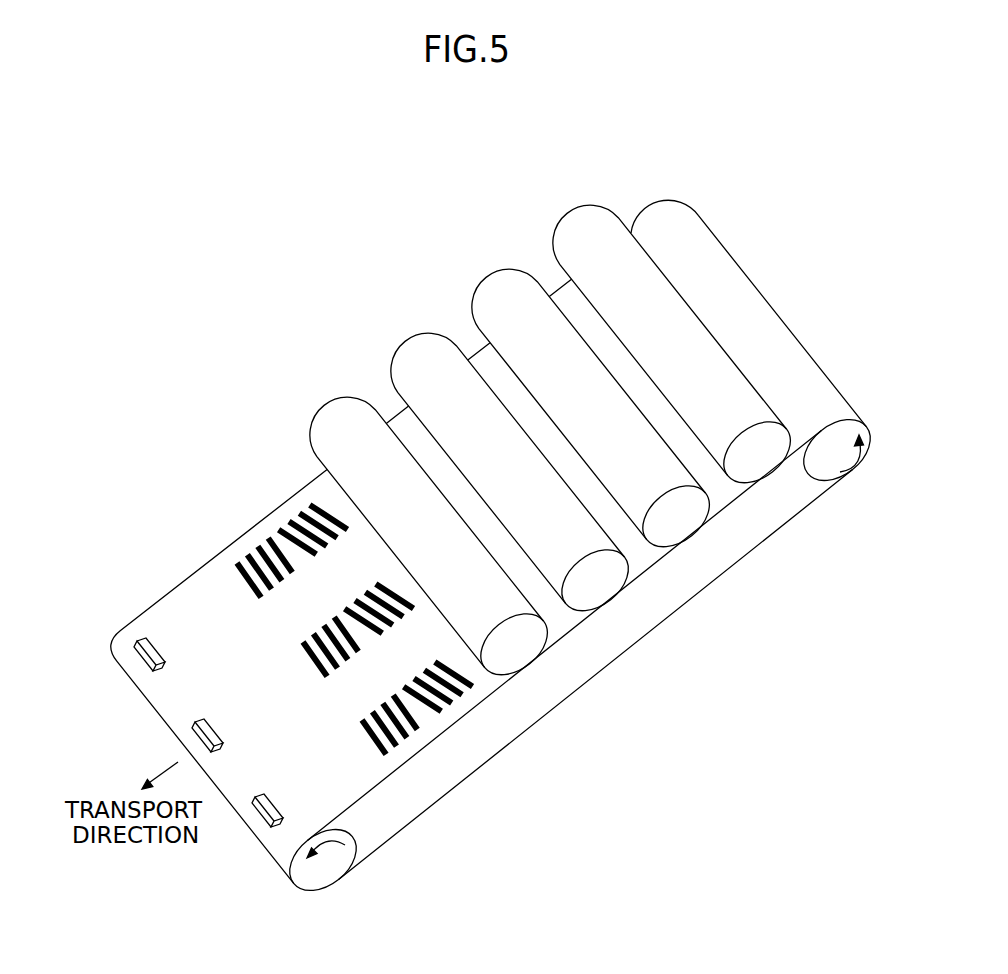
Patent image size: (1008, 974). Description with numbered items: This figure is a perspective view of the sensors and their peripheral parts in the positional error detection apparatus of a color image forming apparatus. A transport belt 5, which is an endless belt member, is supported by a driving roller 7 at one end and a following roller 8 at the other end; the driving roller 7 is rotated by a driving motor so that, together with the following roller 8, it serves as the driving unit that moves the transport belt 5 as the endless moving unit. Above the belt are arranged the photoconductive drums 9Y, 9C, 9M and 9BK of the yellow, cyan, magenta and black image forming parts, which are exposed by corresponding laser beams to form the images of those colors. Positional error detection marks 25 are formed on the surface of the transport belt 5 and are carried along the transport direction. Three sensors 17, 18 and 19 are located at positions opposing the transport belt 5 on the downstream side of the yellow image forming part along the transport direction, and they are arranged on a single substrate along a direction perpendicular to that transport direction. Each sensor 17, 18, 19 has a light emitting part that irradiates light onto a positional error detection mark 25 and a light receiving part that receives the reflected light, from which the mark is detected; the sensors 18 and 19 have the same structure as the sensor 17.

The transport belt 5 is at (492, 750).
The driving roller 7 is at (327, 872).
The following roller 8 is at (842, 468).
The photoconductive drum 9Y is at (320, 422).
The photoconductive drum 9C is at (398, 363).
The photoconductive drum 9M is at (485, 303).
The photoconductive drum 9BK is at (560, 240).
The sensor 17 is at (285, 815).
The sensor 18 is at (227, 737).
The sensor 19 is at (163, 657).
The positional error detection mark 25 is at (260, 597).